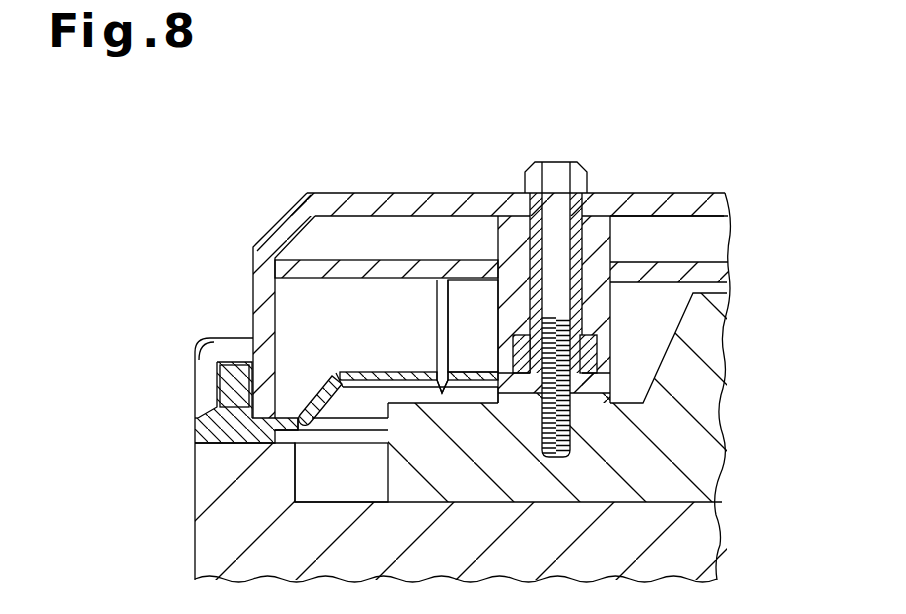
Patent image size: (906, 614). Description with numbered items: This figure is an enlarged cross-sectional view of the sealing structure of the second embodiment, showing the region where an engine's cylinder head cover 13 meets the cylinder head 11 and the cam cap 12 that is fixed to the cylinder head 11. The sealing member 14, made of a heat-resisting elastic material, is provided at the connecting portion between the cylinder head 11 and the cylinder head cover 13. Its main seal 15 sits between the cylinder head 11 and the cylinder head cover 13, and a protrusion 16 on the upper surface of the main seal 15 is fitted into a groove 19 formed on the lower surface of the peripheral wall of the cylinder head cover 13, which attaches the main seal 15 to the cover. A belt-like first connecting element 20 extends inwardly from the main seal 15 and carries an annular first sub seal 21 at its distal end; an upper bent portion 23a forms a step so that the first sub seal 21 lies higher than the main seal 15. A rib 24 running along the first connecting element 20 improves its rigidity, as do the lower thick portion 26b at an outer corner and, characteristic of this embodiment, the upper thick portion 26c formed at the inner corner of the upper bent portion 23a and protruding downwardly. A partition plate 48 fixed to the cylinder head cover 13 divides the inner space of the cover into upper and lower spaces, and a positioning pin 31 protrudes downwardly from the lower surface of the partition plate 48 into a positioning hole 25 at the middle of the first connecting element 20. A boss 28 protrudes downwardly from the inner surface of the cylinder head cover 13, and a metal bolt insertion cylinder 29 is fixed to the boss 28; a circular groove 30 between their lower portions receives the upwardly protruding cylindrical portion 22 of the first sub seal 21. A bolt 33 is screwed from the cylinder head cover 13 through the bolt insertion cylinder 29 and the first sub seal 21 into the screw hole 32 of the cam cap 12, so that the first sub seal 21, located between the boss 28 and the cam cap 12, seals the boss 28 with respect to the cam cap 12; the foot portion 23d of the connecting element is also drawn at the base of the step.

The cylinder head 11 is at (203, 537).
The cam cap 12 is at (717, 428).
The cylinder head cover 13 is at (334, 200).
The sealing member 14 is at (198, 422).
The main seal 15 is at (220, 445).
The protrusion 16 is at (206, 378).
The groove 19 is at (231, 360).
The first connecting element 20 is at (487, 371).
The first sub seal 21 is at (603, 383).
The cylindrical portion 22 is at (596, 336).
The upper bent portion 23a is at (334, 373).
The foot portion 23d is at (331, 460).
The rib 24 is at (397, 371).
The positioning hole 25 is at (463, 353).
The lower thick portion 26b is at (298, 407).
The upper thick portion 26c is at (333, 388).
The boss 28 is at (508, 236).
The bolt insertion cylinder 29 is at (578, 237).
The circular groove 30 is at (487, 403).
The positioning pin 31 is at (436, 300).
The screw hole 32 is at (543, 428).
The bolt 33 is at (568, 163).
The partition plate 48 is at (358, 262).